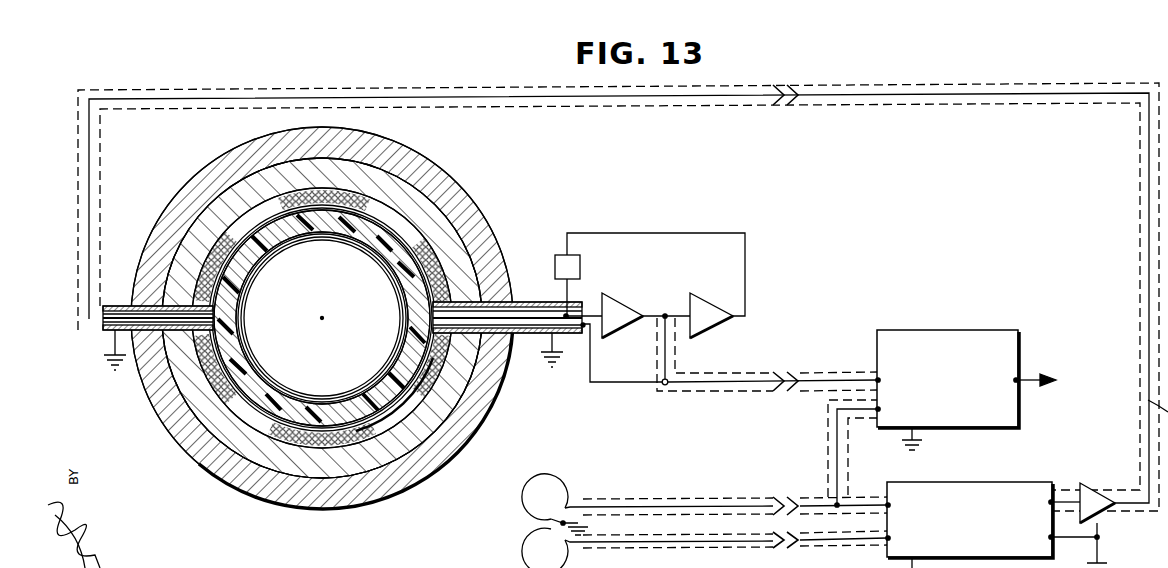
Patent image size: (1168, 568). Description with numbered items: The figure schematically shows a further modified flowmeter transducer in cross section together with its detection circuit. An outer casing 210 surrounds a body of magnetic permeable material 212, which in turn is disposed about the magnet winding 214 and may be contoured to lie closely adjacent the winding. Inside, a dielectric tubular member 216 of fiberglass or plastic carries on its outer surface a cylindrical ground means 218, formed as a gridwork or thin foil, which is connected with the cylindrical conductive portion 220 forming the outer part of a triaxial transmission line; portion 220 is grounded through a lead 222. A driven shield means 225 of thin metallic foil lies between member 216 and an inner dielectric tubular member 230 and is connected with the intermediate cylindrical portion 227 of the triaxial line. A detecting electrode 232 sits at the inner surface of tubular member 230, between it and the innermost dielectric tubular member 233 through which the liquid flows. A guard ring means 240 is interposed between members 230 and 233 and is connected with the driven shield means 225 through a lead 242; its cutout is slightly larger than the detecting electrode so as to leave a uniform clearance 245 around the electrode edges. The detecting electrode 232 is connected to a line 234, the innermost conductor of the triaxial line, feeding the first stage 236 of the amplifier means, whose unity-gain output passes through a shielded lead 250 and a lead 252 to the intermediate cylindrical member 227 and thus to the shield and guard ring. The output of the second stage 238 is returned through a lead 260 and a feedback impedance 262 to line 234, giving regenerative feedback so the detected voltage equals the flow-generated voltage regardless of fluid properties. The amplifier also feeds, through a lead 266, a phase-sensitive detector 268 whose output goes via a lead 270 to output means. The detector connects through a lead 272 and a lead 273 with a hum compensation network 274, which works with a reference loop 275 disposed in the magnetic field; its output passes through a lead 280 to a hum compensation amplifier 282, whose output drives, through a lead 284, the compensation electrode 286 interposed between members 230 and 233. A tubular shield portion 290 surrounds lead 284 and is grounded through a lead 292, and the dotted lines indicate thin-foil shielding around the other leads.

The outer casing 210 is at (487, 203).
The body of magnetic permeable material 212 is at (235, 192).
The magnet winding 214 is at (373, 197).
The tubular member 216 is at (212, 366).
The ground means 218 is at (230, 397).
The cylindrical conductive portion 220 is at (527, 300).
The lead 222 is at (562, 342).
The driven shield means 225 is at (378, 416).
The intermediate cylindrical portion 227 is at (530, 334).
The tubular member 230 is at (248, 377).
The detecting electrode 232 is at (400, 297).
The innermost tubular member 233 is at (343, 387).
The line 234 is at (577, 304).
The first stage of amplifier means 236 is at (634, 310).
The second stage of amplifier means 238 is at (705, 292).
The guard ring means 240 is at (350, 250).
The lead 242 is at (377, 262).
The clearance 245 is at (400, 367).
The shielded lead 250 is at (658, 352).
The lead 252 is at (640, 383).
The lead 260 is at (700, 232).
The impedance means 262 is at (557, 253).
The lead 266 is at (733, 383).
The phase-sensitive detector 268 is at (960, 330).
The lead 270 is at (1030, 377).
The lead 272 is at (838, 443).
The lead 273 is at (668, 500).
The hum compensation network 274 is at (947, 488).
The reference loop 275 is at (527, 525).
The lead 280 is at (1063, 500).
The hum compensation amplifier 282 is at (1108, 508).
The lead 284 is at (333, 90).
The compensation electrode 286 is at (247, 292).
The tubular shield portion 290 is at (128, 305).
The lead 292 is at (110, 336).